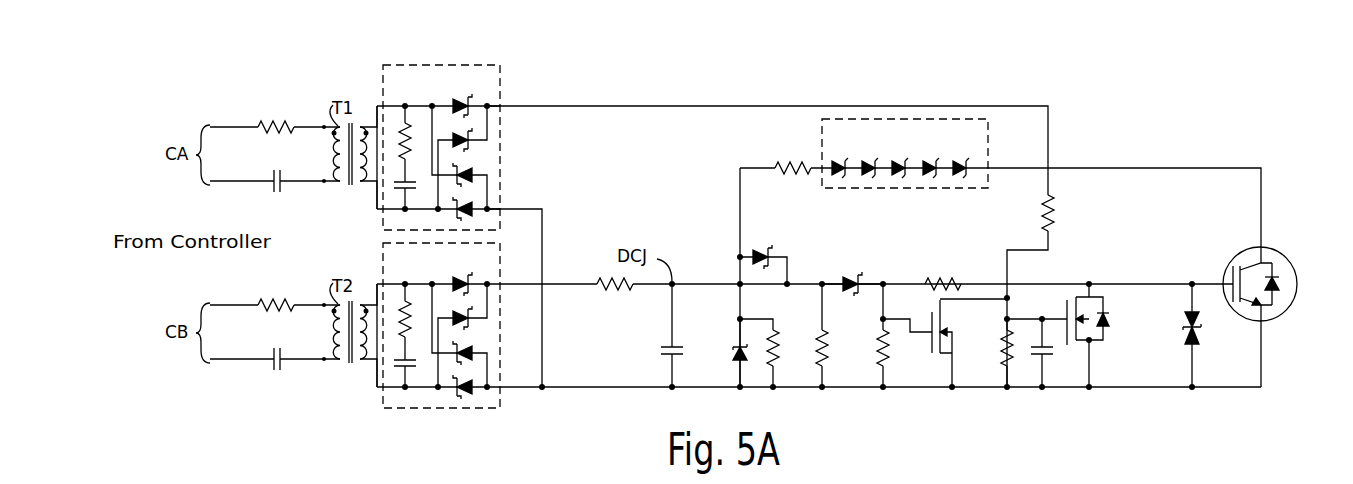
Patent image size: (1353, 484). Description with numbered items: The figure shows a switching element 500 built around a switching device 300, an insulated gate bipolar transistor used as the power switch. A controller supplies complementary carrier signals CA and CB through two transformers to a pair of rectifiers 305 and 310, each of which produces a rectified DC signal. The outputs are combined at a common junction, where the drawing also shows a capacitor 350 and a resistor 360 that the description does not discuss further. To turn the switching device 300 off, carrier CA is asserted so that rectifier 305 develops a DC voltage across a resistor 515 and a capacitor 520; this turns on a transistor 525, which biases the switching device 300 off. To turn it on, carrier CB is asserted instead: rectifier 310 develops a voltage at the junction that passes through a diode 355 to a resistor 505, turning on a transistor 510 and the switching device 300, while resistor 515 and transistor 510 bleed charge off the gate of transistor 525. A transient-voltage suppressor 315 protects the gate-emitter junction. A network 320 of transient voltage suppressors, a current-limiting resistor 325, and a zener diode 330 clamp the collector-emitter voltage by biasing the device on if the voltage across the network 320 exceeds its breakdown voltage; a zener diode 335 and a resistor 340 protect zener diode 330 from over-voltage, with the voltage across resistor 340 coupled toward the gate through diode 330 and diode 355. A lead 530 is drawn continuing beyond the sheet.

The switching device 300 is at (1270, 250).
The rectifier 305 is at (417, 91).
The rectifier 310 is at (417, 269).
The transient-voltage suppressor 315 is at (1186, 328).
The network of transient voltage suppressors 320 is at (921, 146).
The resistor 325 is at (780, 165).
The zener diode 330 is at (758, 250).
The zener diode 335 is at (736, 346).
The resistor 340 is at (776, 345).
The capacitor 350 is at (666, 345).
The diode 355 is at (849, 277).
The resistor 360 is at (826, 368).
The switching element 500 is at (226, 74).
The resistor 505 is at (880, 345).
The transistor 510 is at (946, 323).
The resistor 515 is at (1005, 355).
The capacitor 520 is at (1046, 352).
The transistor 525 is at (1092, 338).
The connection to continued circuit 530 is at (362, 480).